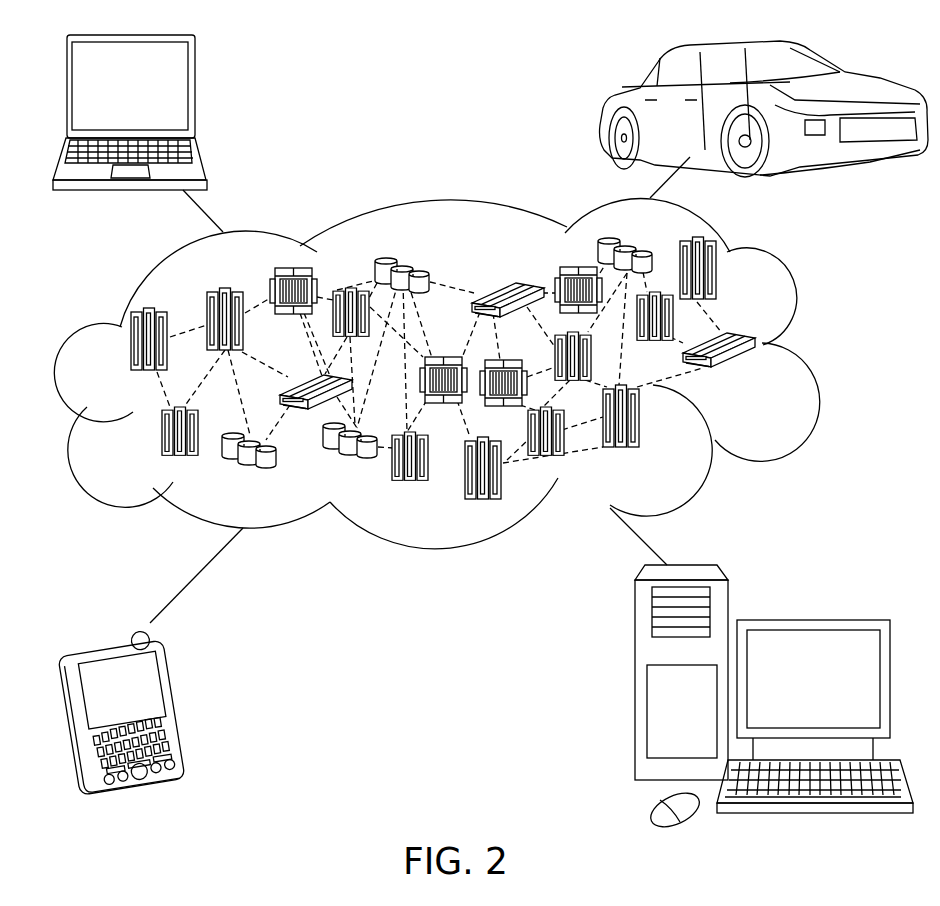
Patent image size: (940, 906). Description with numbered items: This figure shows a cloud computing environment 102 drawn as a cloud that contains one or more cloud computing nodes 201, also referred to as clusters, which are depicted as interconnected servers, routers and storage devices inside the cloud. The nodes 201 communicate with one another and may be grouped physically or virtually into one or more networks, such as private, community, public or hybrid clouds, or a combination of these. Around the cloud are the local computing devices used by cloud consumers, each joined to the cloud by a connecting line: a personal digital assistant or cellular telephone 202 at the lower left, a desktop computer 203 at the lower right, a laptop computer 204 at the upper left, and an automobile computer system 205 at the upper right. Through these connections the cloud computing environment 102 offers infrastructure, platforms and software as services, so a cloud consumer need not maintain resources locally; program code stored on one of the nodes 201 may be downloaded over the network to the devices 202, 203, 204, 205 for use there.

The cloud computing environment 102 is at (810, 348).
The cloud computing nodes 201 is at (762, 379).
The personal digital assistant (PDA) or cellular telephone 202 is at (187, 705).
The desktop computer 203 is at (810, 620).
The laptop computer 204 is at (195, 92).
The automobile computer system 205 is at (605, 108).